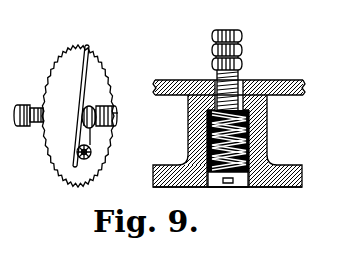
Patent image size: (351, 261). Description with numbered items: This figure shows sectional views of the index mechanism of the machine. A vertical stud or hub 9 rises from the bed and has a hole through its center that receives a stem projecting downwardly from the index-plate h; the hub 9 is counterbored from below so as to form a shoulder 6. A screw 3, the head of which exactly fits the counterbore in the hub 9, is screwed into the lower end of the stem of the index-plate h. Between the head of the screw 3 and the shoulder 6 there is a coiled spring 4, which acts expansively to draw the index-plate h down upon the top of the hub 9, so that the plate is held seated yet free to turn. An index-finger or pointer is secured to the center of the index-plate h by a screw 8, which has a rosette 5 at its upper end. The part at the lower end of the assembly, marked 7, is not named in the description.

The screw 3 is at (22, 102).
The coiled spring 4 is at (32, 128).
The rosette 5 is at (118, 117).
The shoulder 6 is at (200, 107).
The nut 7 is at (210, 188).
The screw 8 is at (215, 78).
The vertical stud or hub 9 is at (275, 187).
The index-plate h is at (283, 80).